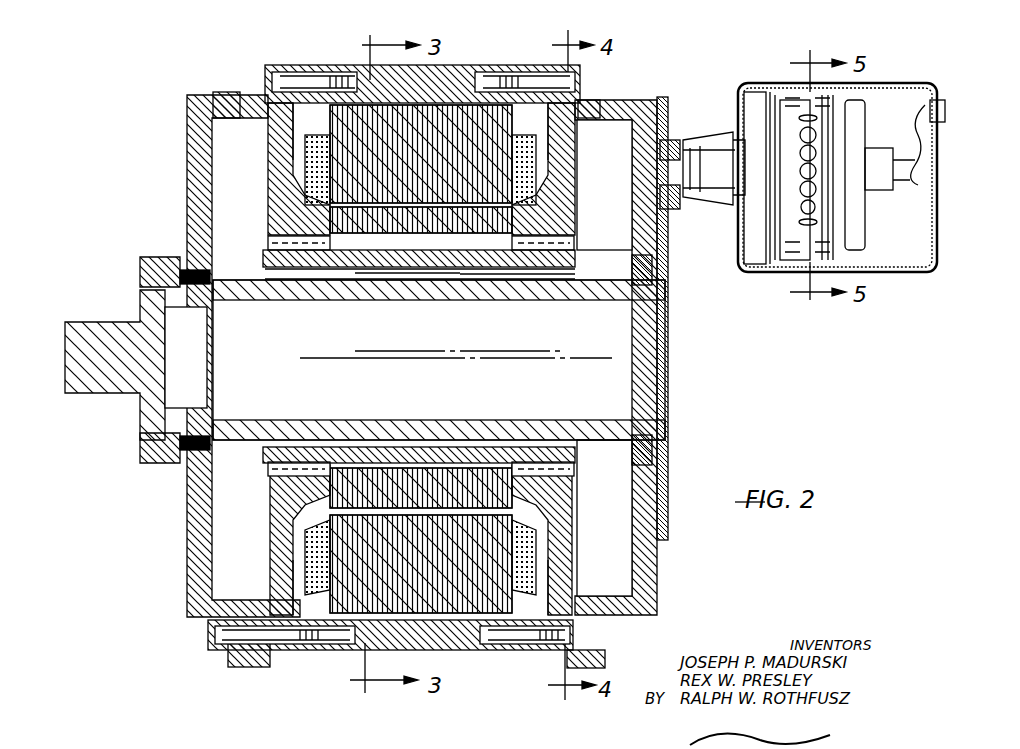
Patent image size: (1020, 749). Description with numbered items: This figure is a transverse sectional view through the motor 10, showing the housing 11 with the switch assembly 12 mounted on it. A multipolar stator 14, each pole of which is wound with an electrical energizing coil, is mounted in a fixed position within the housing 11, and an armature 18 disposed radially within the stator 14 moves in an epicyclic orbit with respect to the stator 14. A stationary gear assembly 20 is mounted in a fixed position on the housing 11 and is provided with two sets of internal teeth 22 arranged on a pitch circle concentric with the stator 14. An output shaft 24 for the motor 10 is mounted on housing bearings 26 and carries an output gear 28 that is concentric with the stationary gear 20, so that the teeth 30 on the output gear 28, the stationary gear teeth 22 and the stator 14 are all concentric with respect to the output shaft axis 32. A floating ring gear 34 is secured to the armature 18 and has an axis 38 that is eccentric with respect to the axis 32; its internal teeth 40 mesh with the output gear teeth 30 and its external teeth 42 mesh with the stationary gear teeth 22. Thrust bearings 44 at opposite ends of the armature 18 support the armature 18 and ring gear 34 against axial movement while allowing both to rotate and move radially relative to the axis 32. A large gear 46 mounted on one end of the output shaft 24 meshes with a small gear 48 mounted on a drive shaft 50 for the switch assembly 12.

The motor 10 is at (682, 40).
The housing 11 is at (187, 183).
The switch assembly 12 is at (880, 95).
The multipolar stator 14 is at (455, 100).
The armature 18 is at (455, 462).
The stationary gear assembly 20 is at (282, 155).
The internal teeth 22 is at (290, 268).
The output shaft 24 is at (110, 322).
The housing bearings 26 is at (205, 285).
The output gear 28 is at (365, 268).
The output gear teeth 30 is at (437, 270).
The output shaft axis 32 is at (515, 362).
The floating ring gear 34 is at (408, 268).
The ring gear axis 38 is at (472, 356).
The internal teeth 40 is at (565, 240).
The external teeth 42 is at (268, 243).
The thrust bearings 44 is at (300, 207).
The large gear 46 is at (668, 372).
The small gear 48 is at (672, 140).
The drive shaft 50 is at (690, 180).